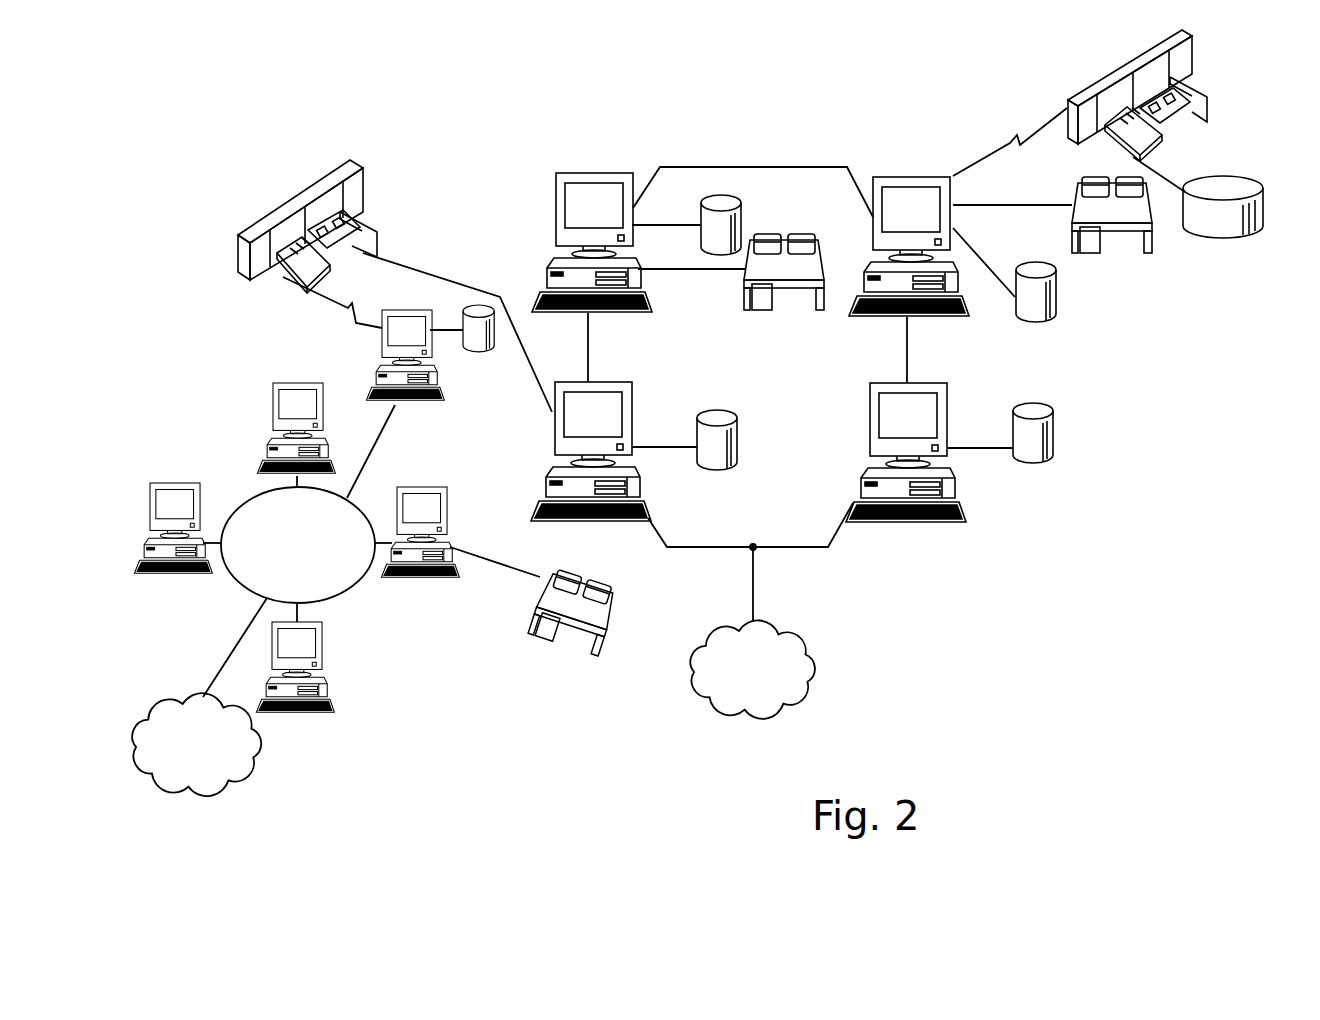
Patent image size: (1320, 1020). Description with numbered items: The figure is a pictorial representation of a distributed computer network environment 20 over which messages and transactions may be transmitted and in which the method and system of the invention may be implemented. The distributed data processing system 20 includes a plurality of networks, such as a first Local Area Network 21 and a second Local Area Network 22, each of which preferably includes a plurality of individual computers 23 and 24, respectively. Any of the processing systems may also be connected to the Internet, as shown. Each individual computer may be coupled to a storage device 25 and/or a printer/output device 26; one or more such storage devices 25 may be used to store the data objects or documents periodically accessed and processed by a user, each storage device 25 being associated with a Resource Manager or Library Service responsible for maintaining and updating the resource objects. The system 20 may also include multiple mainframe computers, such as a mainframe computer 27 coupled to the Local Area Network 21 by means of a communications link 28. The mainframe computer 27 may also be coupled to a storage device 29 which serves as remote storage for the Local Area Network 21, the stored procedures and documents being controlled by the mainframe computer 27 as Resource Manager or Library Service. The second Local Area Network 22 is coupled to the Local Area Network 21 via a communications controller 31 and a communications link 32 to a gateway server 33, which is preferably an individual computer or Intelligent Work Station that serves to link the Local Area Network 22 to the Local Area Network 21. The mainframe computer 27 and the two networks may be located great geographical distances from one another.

The distributed computer network environment 20 is at (713, 120).
The Local Area Network 21 is at (782, 548).
The Local Area Network 22 is at (235, 582).
The individual computer 23 is at (573, 173).
The individual computer 24 is at (168, 483).
The storage device 25 is at (737, 222).
The printer/output device 26 is at (786, 240).
The mainframe computer 27 is at (1133, 57).
The communications link 28 is at (1012, 135).
The storage device 29 is at (1223, 173).
The communications controller 31 is at (362, 170).
The communications link 32 is at (330, 307).
The gateway server 33 is at (393, 310).